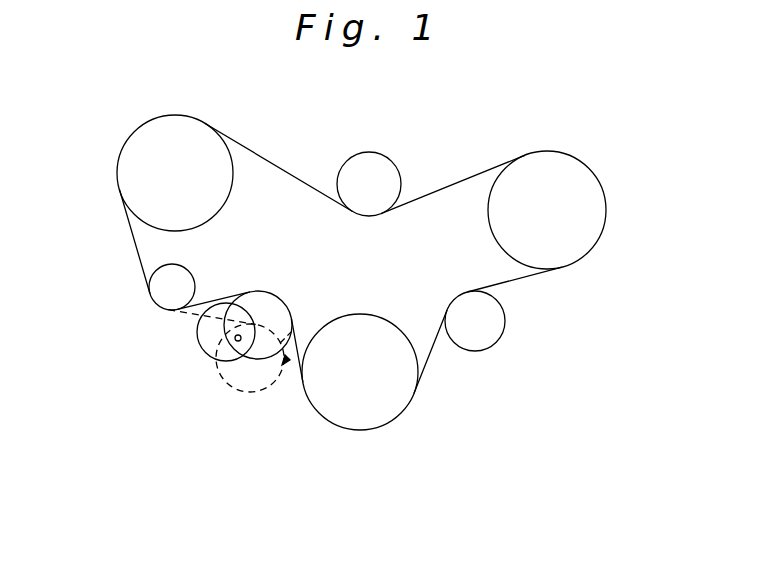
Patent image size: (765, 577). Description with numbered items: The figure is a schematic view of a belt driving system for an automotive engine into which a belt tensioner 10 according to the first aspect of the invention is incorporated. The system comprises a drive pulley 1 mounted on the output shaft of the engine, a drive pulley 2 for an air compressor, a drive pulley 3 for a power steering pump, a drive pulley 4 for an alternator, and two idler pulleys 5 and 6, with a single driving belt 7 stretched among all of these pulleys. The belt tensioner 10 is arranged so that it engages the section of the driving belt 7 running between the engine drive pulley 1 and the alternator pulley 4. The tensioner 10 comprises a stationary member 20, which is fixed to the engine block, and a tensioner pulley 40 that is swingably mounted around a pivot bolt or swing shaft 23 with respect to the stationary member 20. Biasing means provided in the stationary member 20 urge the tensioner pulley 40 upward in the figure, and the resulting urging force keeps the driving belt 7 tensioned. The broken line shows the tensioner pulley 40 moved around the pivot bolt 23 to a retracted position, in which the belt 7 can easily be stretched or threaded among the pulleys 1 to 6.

The drive pulley 1 is at (393, 395).
The drive pulley for air compressor 2 is at (580, 240).
The drive pulley for power steering pump 3 is at (137, 153).
The drive pulley for alternator 4 is at (160, 285).
The idler pulley 5 is at (490, 318).
The idler pulley 6 is at (387, 172).
The driving belt 7 is at (270, 165).
The belt tensioner 10 is at (279, 407).
The stationary member 20 is at (205, 335).
The pivot bolt 23 is at (218, 358).
The tensioner pulley 40 is at (247, 360).